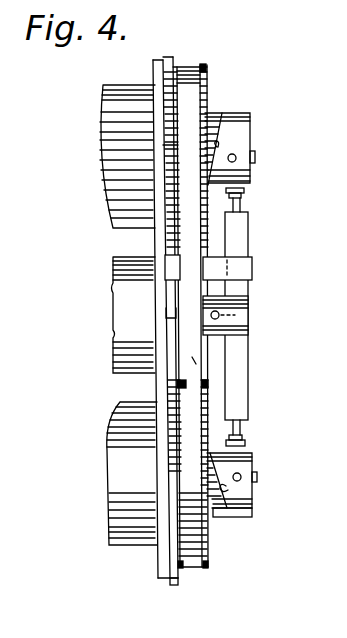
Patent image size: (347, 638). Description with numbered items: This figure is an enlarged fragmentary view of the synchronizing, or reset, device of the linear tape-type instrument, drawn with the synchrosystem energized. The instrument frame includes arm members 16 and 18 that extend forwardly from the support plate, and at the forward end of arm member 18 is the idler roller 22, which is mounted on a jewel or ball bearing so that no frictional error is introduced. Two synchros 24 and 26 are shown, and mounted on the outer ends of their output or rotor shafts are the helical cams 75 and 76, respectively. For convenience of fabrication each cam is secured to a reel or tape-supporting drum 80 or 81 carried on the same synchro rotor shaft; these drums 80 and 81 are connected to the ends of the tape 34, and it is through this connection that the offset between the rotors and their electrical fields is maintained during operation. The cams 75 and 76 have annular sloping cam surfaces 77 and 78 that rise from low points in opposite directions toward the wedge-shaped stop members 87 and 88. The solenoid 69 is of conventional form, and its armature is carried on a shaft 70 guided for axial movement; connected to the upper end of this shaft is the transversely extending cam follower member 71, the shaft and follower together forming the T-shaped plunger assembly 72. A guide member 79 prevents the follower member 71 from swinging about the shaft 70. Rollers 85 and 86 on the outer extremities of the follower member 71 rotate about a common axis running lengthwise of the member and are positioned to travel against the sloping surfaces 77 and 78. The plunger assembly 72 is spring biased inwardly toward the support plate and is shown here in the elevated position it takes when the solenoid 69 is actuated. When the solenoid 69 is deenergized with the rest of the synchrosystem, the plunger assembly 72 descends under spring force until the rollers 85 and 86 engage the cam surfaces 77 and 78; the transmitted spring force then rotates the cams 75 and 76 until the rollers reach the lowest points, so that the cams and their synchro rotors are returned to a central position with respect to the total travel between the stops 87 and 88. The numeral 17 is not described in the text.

The arm member 16 is at (175, 58).
The bearing 17 is at (161, 567).
The arm member 18 is at (177, 585).
The idler roller 22 is at (308, 7).
The synchro 24 is at (103, 185).
The synchro 26 is at (108, 448).
The tape 34 is at (196, 364).
The solenoid 69 is at (115, 290).
The shaft 70 is at (168, 313).
The cam follower member 71 is at (240, 313).
The plunger assembly 72 is at (238, 385).
The helical cam 75 is at (214, 116).
The helical cam 76 is at (216, 518).
The sloping cam surface 77 is at (205, 145).
The sloping cam surface 78 is at (226, 485).
The guide member 79 is at (240, 266).
The tape-supporting drum 80 is at (206, 70).
The tape-supporting drum 81 is at (210, 568).
The roller 85 is at (243, 200).
The roller 86 is at (246, 437).
The wedge-shaped stop member 87 is at (247, 113).
The wedge-shaped stop member 88 is at (252, 514).